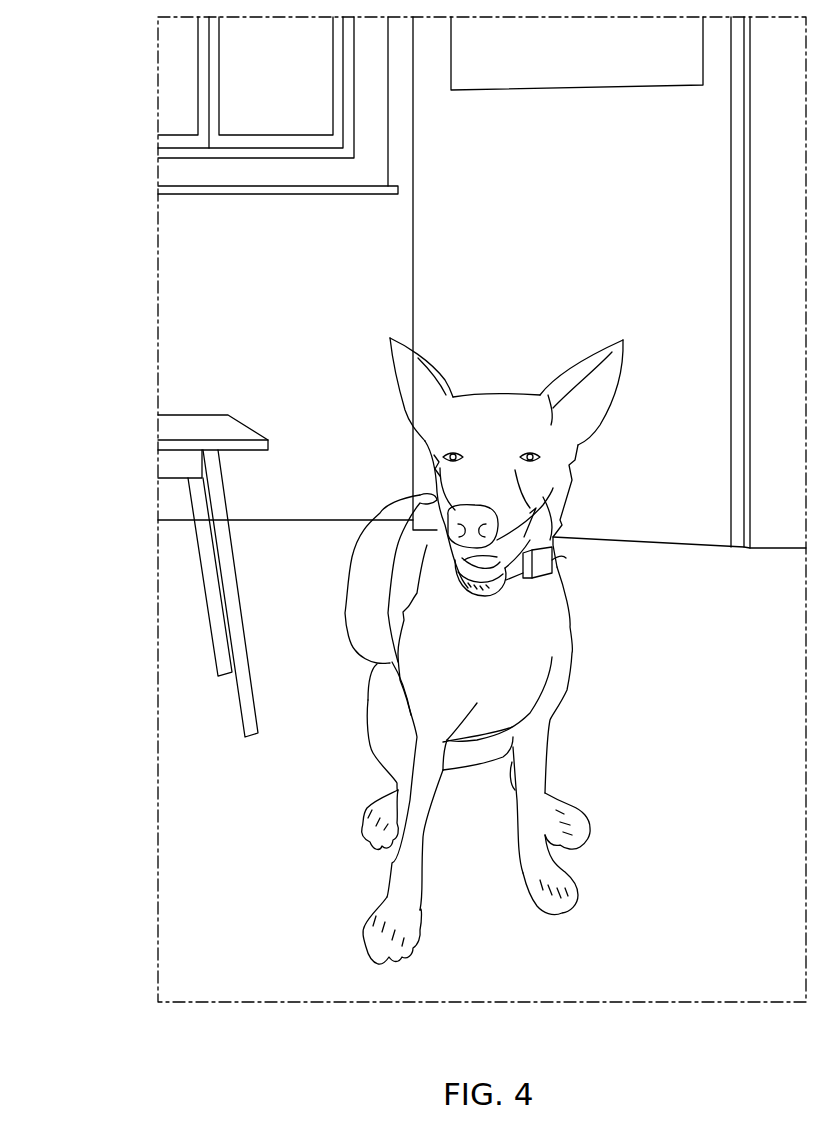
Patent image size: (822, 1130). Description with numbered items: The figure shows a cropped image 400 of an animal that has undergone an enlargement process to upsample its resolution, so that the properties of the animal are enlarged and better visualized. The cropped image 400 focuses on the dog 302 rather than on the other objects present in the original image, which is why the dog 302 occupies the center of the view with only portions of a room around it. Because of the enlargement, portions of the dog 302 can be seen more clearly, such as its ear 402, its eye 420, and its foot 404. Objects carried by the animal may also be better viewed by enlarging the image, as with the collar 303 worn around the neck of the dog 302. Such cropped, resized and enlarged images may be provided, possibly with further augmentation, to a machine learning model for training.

The cropped image 400 is at (87, 112).
The ear 402 is at (585, 382).
The eye 420 is at (528, 466).
The collar 303 is at (545, 570).
The dog 302 is at (460, 605).
The foot 404 is at (395, 903).